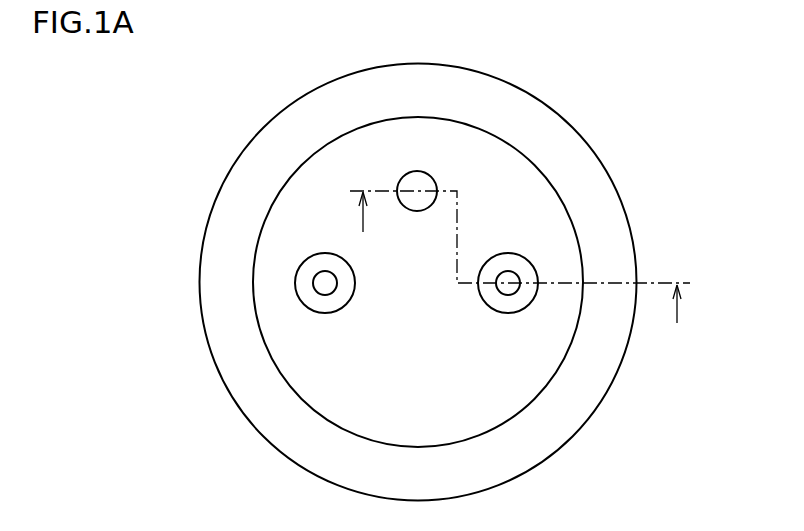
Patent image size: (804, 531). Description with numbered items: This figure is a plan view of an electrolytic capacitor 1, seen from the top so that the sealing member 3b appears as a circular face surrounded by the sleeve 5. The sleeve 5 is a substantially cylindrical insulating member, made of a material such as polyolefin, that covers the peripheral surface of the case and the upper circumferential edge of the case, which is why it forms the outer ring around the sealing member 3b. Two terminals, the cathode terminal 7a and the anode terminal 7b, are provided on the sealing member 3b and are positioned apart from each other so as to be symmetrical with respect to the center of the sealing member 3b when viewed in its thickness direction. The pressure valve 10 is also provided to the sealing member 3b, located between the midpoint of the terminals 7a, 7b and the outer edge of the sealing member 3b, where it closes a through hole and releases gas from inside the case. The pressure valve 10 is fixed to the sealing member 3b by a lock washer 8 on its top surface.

The electrolytic capacitor 1 is at (660, 92).
The sleeve 5 is at (245, 383).
The sealing member 3b is at (435, 351).
The pressure valve 10 is at (402, 180).
The lock washer 8 is at (417, 191).
The cathode terminal 7a is at (325, 298).
The anode terminal 7b is at (508, 298).